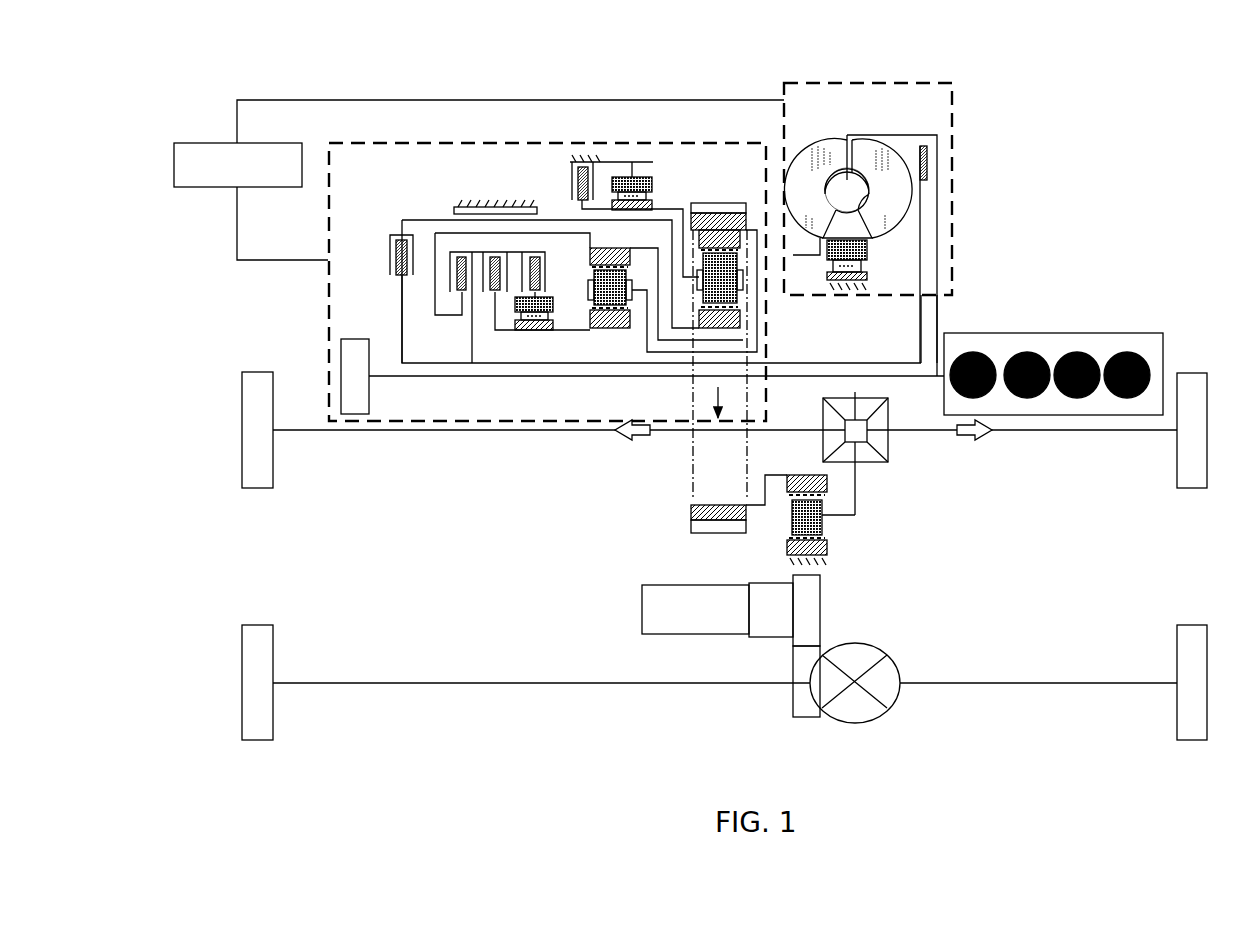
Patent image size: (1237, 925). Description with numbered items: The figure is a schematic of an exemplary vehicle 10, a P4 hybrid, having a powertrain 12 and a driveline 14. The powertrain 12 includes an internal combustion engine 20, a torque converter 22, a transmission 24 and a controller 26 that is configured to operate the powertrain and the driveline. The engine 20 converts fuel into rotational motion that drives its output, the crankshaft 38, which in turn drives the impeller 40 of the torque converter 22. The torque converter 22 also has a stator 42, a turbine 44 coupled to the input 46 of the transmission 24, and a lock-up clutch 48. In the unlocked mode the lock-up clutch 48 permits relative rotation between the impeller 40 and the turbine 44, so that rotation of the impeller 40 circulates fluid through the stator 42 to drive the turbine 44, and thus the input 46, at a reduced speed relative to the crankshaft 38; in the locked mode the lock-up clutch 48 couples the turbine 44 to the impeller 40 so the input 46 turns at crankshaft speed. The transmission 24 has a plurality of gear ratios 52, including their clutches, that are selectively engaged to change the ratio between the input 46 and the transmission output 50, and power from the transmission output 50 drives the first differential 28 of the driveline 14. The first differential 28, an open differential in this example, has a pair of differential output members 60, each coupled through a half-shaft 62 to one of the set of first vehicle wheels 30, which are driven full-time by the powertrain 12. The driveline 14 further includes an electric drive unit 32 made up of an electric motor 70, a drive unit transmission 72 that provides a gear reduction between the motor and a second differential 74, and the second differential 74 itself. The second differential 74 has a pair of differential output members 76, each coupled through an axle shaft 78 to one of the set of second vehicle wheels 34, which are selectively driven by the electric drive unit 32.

The vehicle 10 is at (1108, 102).
The powertrain 12 is at (968, 222).
The driveline 14 is at (664, 462).
The internal combustion engine 20 is at (1140, 333).
The torque converter 22 is at (953, 108).
The transmission 24 is at (328, 312).
The controller 26 is at (205, 143).
The first differential 28 is at (900, 462).
The set of first vehicle wheels 30 is at (262, 382).
The electric drive unit 32 is at (890, 620).
The set of second vehicle wheels 34 is at (262, 635).
The crankshaft 38 is at (943, 370).
The impeller 40 is at (814, 180).
The stator 42 is at (832, 240).
The turbine 44 is at (885, 188).
The input 46 is at (555, 363).
The lock-up clutch 48 is at (938, 160).
The transmission output 50 is at (857, 505).
The gear ratios 52 is at (462, 250).
The differential output members 60 is at (832, 438).
The half-shaft 62 is at (405, 432).
The electric motor 70 is at (648, 612).
The drive unit transmission 72 is at (813, 607).
The second differential 74 is at (905, 704).
The differential output members 76 is at (893, 672).
The axle shaft 78 is at (385, 686).